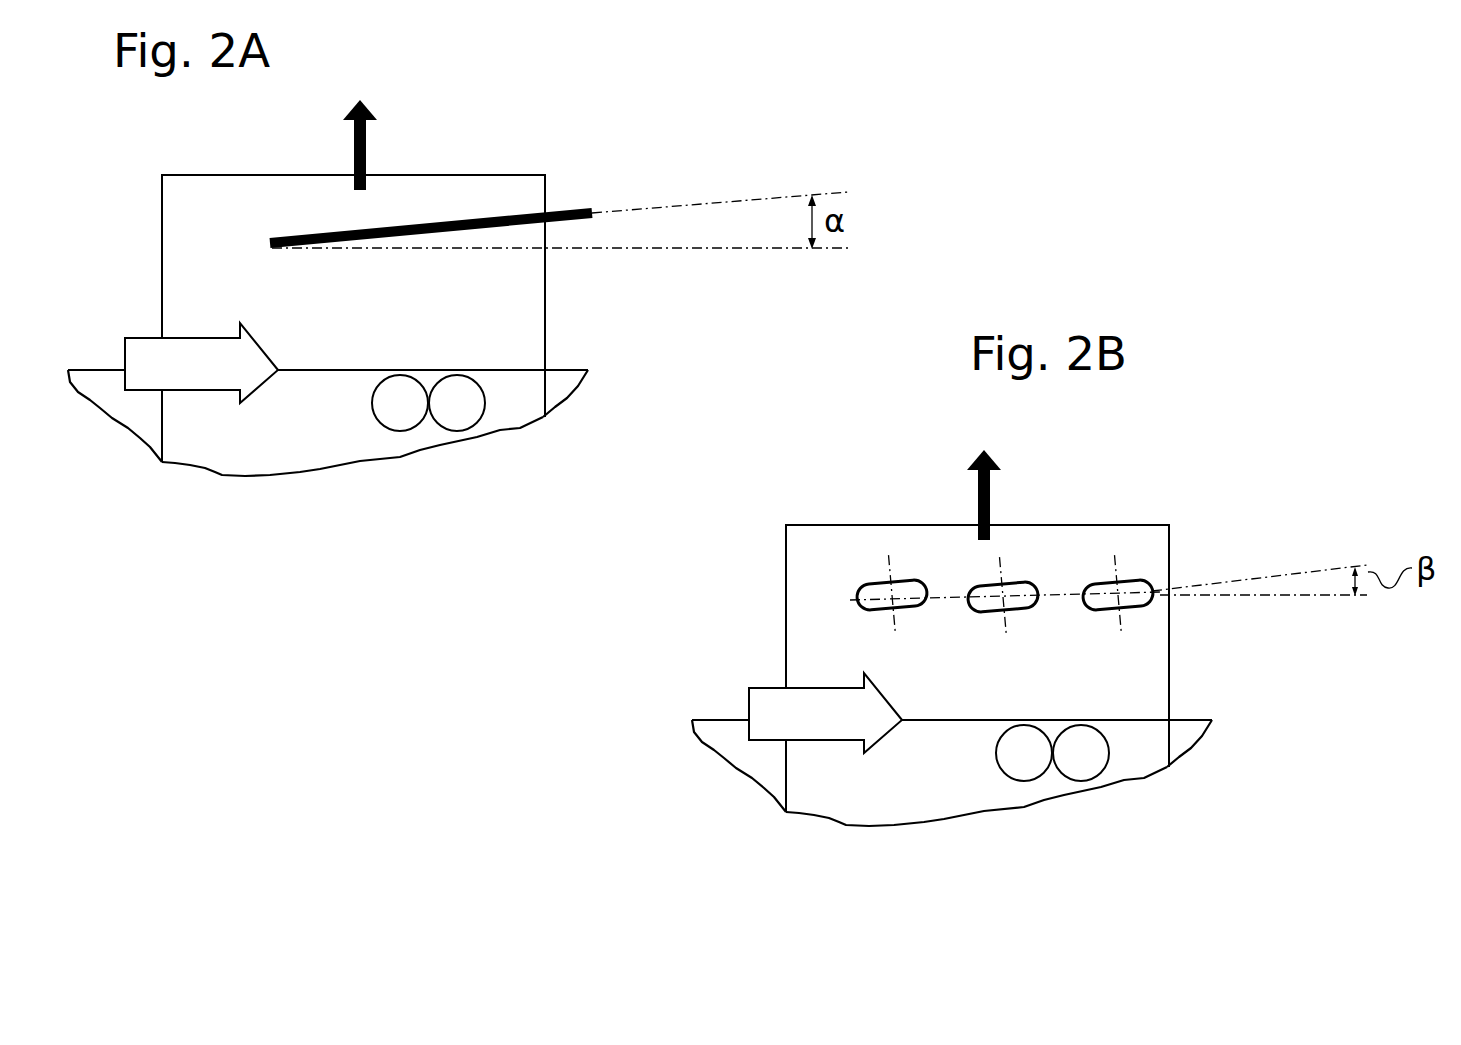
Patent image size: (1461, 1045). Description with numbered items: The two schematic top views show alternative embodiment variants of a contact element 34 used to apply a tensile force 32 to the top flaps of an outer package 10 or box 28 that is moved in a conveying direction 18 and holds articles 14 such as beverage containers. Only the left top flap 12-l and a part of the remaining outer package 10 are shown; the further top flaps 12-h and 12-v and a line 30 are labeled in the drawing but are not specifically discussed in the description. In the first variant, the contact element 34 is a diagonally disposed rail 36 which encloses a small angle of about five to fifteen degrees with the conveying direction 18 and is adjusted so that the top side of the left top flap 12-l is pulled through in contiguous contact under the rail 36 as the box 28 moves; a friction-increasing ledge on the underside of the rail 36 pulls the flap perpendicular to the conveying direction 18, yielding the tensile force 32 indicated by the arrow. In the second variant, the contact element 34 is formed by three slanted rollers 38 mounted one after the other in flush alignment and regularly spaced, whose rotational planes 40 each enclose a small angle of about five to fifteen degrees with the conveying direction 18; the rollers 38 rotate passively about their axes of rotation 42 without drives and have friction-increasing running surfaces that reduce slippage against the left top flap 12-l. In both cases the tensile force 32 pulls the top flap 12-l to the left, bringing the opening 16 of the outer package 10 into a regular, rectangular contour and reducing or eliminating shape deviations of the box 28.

In FIG. 2B, the outer package 10 is at (976, 858).
In FIG. 2B, the box 28 is at (976, 858).
In FIG. 2B, the horizontal wall portion 12-h is at (739, 806).
In FIG. 2B, the left top flap 12-l is at (977, 668).
In FIG. 2B, the vertical wall portion 12-v is at (1205, 782).
In FIG. 2B, the articles 14 is at (1052, 753).
In FIG. 2B, the opening 16 is at (881, 787).
In FIG. 2B, the conveying direction 18 is at (825, 713).
In FIG. 2B, the water surface 30 is at (952, 677).
In FIG. 2B, the tensile force 32 is at (999, 495).
In FIG. 2A, the contact element 34 is at (471, 175).
In FIG. 2B, the contact element 34 is at (1033, 516).
In FIG. 2A, the rail 36 is at (567, 210).
In FIG. 2B, the rollers 38 is at (872, 582).
In FIG. 2B, the rotational planes 40 is at (848, 596).
In FIG. 2B, the axes of rotation 42 is at (888, 632).